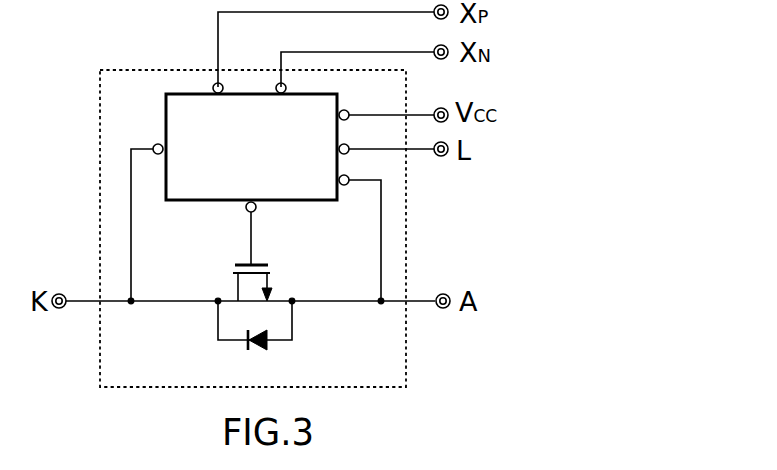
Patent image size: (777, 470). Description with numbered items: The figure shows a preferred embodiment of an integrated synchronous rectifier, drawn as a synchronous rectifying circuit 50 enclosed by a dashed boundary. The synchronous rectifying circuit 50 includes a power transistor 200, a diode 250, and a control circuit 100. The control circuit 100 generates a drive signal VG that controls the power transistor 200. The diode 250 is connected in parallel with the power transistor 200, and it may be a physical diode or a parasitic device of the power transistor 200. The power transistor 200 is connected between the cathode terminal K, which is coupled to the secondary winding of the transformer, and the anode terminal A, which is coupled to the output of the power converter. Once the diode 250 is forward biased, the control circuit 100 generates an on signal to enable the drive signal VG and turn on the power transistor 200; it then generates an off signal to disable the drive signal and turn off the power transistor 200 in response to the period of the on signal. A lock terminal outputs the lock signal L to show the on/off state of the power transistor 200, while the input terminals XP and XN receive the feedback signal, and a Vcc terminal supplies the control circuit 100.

The synchronous rectifying circuit 50 is at (115, 69).
The control circuit 100 is at (208, 207).
The power transistor 200 is at (272, 285).
The diode 250 is at (255, 352).